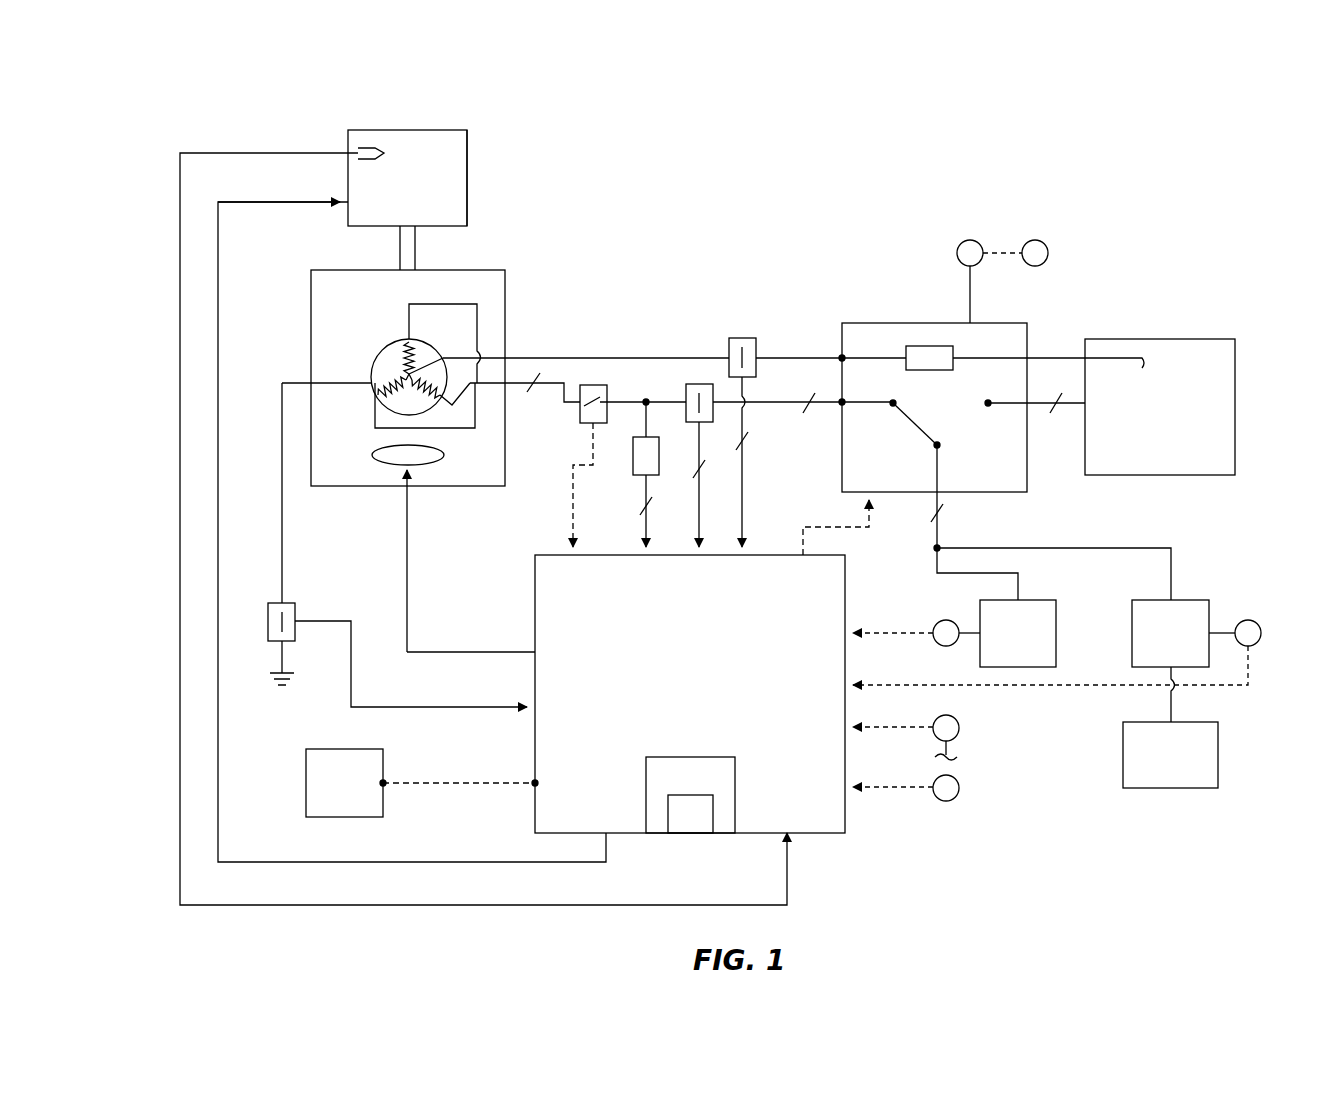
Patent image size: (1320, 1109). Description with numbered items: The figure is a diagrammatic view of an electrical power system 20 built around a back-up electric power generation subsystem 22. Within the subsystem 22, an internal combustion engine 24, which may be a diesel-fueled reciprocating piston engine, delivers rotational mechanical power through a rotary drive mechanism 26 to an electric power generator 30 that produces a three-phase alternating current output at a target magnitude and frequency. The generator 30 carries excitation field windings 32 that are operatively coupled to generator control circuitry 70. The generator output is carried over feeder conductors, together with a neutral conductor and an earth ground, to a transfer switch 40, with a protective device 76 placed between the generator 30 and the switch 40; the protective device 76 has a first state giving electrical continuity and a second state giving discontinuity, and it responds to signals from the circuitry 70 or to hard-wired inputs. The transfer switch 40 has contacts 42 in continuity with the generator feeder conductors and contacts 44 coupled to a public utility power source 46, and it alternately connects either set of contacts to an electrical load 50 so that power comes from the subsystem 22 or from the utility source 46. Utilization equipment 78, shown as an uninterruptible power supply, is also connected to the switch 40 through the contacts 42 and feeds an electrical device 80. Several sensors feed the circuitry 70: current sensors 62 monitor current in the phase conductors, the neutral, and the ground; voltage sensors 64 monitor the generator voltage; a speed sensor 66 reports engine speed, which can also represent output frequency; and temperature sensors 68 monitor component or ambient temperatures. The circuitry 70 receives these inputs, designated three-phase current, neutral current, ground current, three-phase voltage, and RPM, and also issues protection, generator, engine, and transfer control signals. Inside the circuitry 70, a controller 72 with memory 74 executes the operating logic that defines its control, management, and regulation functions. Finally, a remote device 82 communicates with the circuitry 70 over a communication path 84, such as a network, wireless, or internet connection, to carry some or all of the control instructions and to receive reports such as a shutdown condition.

The electrical power system 20 is at (203, 118).
The back-up electric power generation subsystem 22 is at (476, 158).
The internal combustion engine 24 is at (467, 195).
The rotary drive mechanism 26 is at (398, 262).
The electric power generator 30 is at (310, 295).
The excitation field windings 32 is at (440, 460).
The transfer switch 40 is at (872, 323).
The contacts 42 is at (890, 410).
The contacts 44 is at (990, 410).
The public utility power source 46 is at (1162, 339).
The electrical load 50 is at (996, 607).
The current sensors 62 is at (290, 603).
The voltage sensors 64 is at (636, 475).
The sensor 66 is at (368, 142).
The sensors 68 is at (968, 240).
The generator control circuitry 70 is at (830, 835).
The controller 72 is at (690, 795).
The memory 74 is at (690, 814).
The protective device 76 is at (583, 423).
The utilization equipment 78 is at (1073, 635).
The electrical device 80 is at (1170, 755).
The remote device 82 is at (344, 783).
The communication path 84 is at (468, 783).